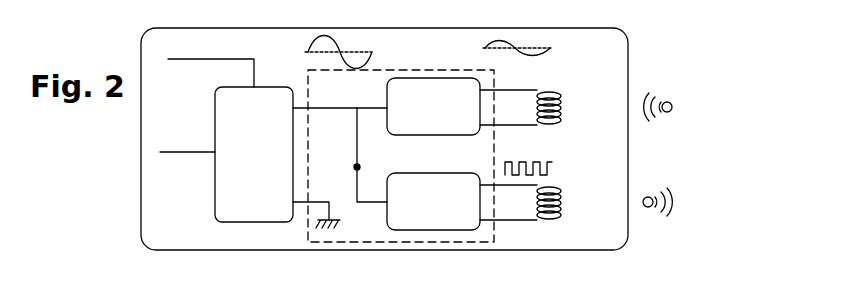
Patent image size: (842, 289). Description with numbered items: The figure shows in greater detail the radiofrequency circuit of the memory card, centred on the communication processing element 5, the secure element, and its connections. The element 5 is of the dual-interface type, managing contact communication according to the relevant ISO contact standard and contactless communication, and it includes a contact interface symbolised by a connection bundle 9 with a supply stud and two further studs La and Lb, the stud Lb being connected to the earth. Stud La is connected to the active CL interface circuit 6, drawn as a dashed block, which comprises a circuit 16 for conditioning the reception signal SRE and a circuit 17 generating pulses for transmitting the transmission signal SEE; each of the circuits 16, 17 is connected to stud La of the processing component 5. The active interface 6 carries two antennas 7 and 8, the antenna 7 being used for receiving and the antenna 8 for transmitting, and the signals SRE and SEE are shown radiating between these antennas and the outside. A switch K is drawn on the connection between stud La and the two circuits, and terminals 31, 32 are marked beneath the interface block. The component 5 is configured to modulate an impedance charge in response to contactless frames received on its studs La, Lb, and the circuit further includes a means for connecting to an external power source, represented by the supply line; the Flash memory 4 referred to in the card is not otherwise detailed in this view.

The Flash memory 4 is at (384, 125).
The communication processing element 5 is at (215, 196).
The active CL interface circuit 6 is at (387, 70).
The receiving antenna 7 is at (553, 99).
The transmitting antenna 8 is at (553, 190).
The connection bundle 9 is at (176, 152).
The reception signal conditioning circuit 16 is at (437, 92).
The pulse generating circuit 17 is at (445, 213).
The first terminal 31 is at (294, 283).
The second terminal 32 is at (536, 288).
The switch K is at (340, 165).
The reception signal SRE is at (683, 105).
The transmission signal SEE is at (683, 202).